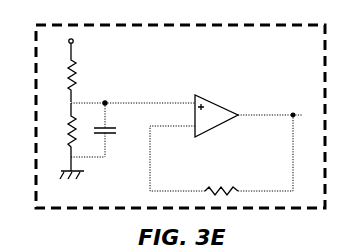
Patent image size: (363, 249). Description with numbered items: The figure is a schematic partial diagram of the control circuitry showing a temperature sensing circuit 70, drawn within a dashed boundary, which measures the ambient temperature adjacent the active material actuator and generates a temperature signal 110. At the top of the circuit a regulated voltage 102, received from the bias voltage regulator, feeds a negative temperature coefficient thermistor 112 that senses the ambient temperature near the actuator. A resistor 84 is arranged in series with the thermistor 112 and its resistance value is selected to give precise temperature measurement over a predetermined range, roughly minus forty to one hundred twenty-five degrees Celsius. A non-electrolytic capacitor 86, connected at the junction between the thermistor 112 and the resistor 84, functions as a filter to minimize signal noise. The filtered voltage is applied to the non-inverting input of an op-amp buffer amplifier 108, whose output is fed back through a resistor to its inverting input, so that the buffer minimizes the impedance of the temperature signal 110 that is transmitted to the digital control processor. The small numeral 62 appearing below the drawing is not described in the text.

The temperature sensing circuit 70 is at (35, 58).
The regulated voltage 102 is at (74, 40).
The negative temperature coefficient thermistor 112 is at (77, 74).
The resistor 84 is at (68, 124).
The non-electrolytic capacitor 86 is at (111, 136).
The op-amp buffer amplifier 108 is at (200, 95).
The temperature signal 110 is at (300, 114).
The sheet numeral 62 is at (52, 245).